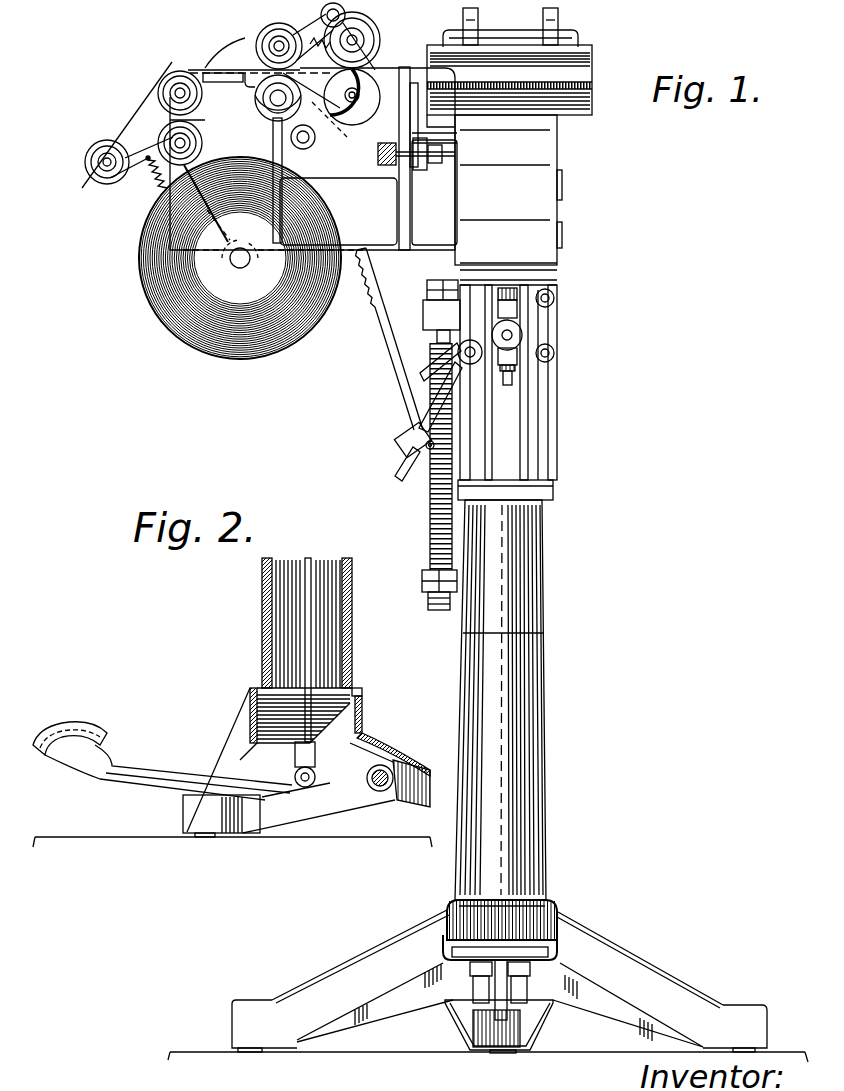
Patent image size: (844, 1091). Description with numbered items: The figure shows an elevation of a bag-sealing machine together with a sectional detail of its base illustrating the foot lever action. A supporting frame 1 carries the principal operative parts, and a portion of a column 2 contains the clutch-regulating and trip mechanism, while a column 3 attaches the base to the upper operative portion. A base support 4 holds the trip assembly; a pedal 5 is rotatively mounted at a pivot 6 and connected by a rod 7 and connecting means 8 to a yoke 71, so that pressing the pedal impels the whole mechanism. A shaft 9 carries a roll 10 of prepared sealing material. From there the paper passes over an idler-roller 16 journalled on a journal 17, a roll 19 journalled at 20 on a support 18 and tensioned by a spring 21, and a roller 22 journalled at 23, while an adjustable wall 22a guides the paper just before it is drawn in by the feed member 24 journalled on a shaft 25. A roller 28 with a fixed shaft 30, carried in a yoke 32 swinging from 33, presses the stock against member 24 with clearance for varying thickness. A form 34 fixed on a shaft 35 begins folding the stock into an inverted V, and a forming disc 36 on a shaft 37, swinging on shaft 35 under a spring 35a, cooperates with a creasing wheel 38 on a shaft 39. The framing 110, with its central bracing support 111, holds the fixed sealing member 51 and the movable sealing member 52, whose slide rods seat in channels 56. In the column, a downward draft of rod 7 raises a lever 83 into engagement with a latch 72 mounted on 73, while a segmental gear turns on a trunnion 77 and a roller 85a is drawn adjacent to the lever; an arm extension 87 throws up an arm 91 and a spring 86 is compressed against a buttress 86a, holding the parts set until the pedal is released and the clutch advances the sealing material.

In FIG. 1, the supporting frame 1 is at (545, 160).
In FIG. 1, the column portion 2 is at (556, 378).
In FIG. 1, the column 3 is at (548, 684).
In FIG. 1, the base support 4 is at (623, 950).
In FIG. 2, the base support 4 is at (230, 733).
In FIG. 1, the pedal 5 is at (565, 912).
In FIG. 2, the pedal 5 is at (153, 767).
In FIG. 2, the pedal pivot 6 is at (382, 792).
In FIG. 1, the rod 7 is at (510, 463).
In FIG. 2, the rod 7 is at (312, 597).
In FIG. 2, the connecting means 8 is at (307, 788).
In FIG. 1, the shaft 9 is at (238, 268).
In FIG. 1, the roll of sealing material 10 is at (167, 322).
In FIG. 1, the idler-roller 16 is at (210, 130).
In FIG. 1, the idler-roller journal 17 is at (203, 143).
In FIG. 1, the roll support 18 is at (125, 171).
In FIG. 1, the roll 19 is at (93, 172).
In FIG. 1, the roll journal 20 is at (108, 153).
In FIG. 1, the spring 21 is at (147, 190).
In FIG. 1, the roller 22 is at (173, 80).
In FIG. 1, the adjustable wall 22a is at (203, 69).
In FIG. 1, the roller journal 23 is at (172, 92).
In FIG. 1, the feed member 24 is at (255, 98).
In FIG. 1, the shaft 25 is at (270, 108).
In FIG. 1, the roller 28 is at (262, 38).
In FIG. 1, the fixed shaft 30 is at (269, 46).
In FIG. 1, the yoke 32 is at (290, 31).
In FIG. 1, the yoke pivot 33 is at (321, 14).
In FIG. 1, the form 34 is at (250, 69).
In FIG. 1, the shaft 35 is at (312, 143).
In FIG. 1, the spring 35a is at (344, 123).
In FIG. 1, the forming disc 36 is at (380, 76).
In FIG. 1, the shaft 37 is at (374, 54).
In FIG. 1, the creasing wheel 38 is at (376, 22).
In FIG. 1, the shaft 39 is at (360, 40).
In FIG. 1, the sealing member 51 is at (592, 58).
In FIG. 1, the sealing member 52 is at (585, 100).
In FIG. 1, the channels 56 is at (417, 158).
In FIG. 1, the yoke 71 is at (518, 322).
In FIG. 1, the latch 72 is at (500, 290).
In FIG. 1, the latch pivot 73 is at (554, 298).
In FIG. 1, the trunnion 77 is at (554, 353).
In FIG. 1, the lever 83 is at (432, 372).
In FIG. 1, the roller 85a is at (457, 352).
In FIG. 1, the spring 86 is at (426, 506).
In FIG. 1, the buttress 86a is at (403, 428).
In FIG. 1, the arm extension 87 is at (398, 460).
In FIG. 1, the arm 91 is at (393, 330).
In FIG. 1, the framing 110 is at (463, 14).
In FIG. 1, the central bracing support 111 is at (515, 28).